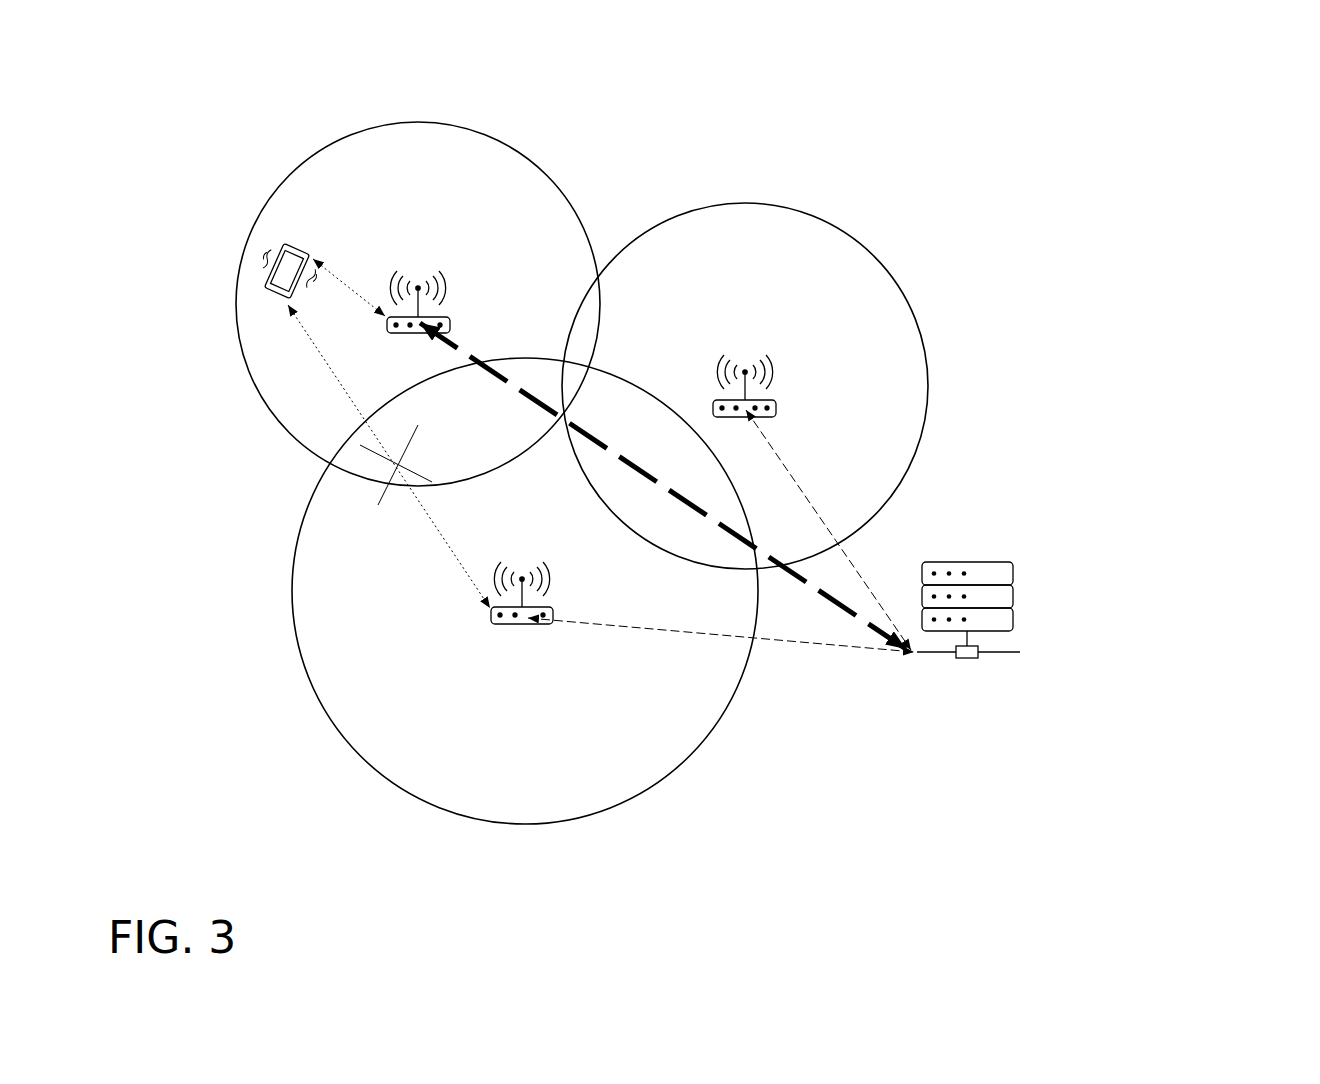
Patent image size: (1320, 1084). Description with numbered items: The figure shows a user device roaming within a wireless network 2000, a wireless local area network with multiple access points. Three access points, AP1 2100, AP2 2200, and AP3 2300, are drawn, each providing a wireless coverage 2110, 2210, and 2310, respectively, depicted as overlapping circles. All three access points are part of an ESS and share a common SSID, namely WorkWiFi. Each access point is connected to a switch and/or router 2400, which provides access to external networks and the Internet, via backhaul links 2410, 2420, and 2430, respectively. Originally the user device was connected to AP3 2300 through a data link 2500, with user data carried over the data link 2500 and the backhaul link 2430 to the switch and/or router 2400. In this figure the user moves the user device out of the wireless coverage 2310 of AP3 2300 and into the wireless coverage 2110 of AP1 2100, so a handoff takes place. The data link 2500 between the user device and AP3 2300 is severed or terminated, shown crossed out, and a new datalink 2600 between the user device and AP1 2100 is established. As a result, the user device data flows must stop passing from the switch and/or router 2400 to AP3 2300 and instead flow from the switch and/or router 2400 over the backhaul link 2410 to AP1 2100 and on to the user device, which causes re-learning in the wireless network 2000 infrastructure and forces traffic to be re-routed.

The wireless network 2000 is at (1178, 98).
The wireless coverage 2110 is at (505, 138).
The wireless coverage 2210 is at (897, 285).
The wireless coverage 2310 is at (338, 733).
The AP1 2100 is at (494, 271).
The AP2 2200 is at (831, 355).
The AP3 2300 is at (597, 568).
The switch and/or router 2400 is at (1080, 621).
The backhaul link 2410 is at (809, 603).
The backhaul link 2420 is at (920, 576).
The backhaul link 2430 is at (809, 676).
The data link 2500 is at (467, 462).
The datalink 2600 is at (379, 253).